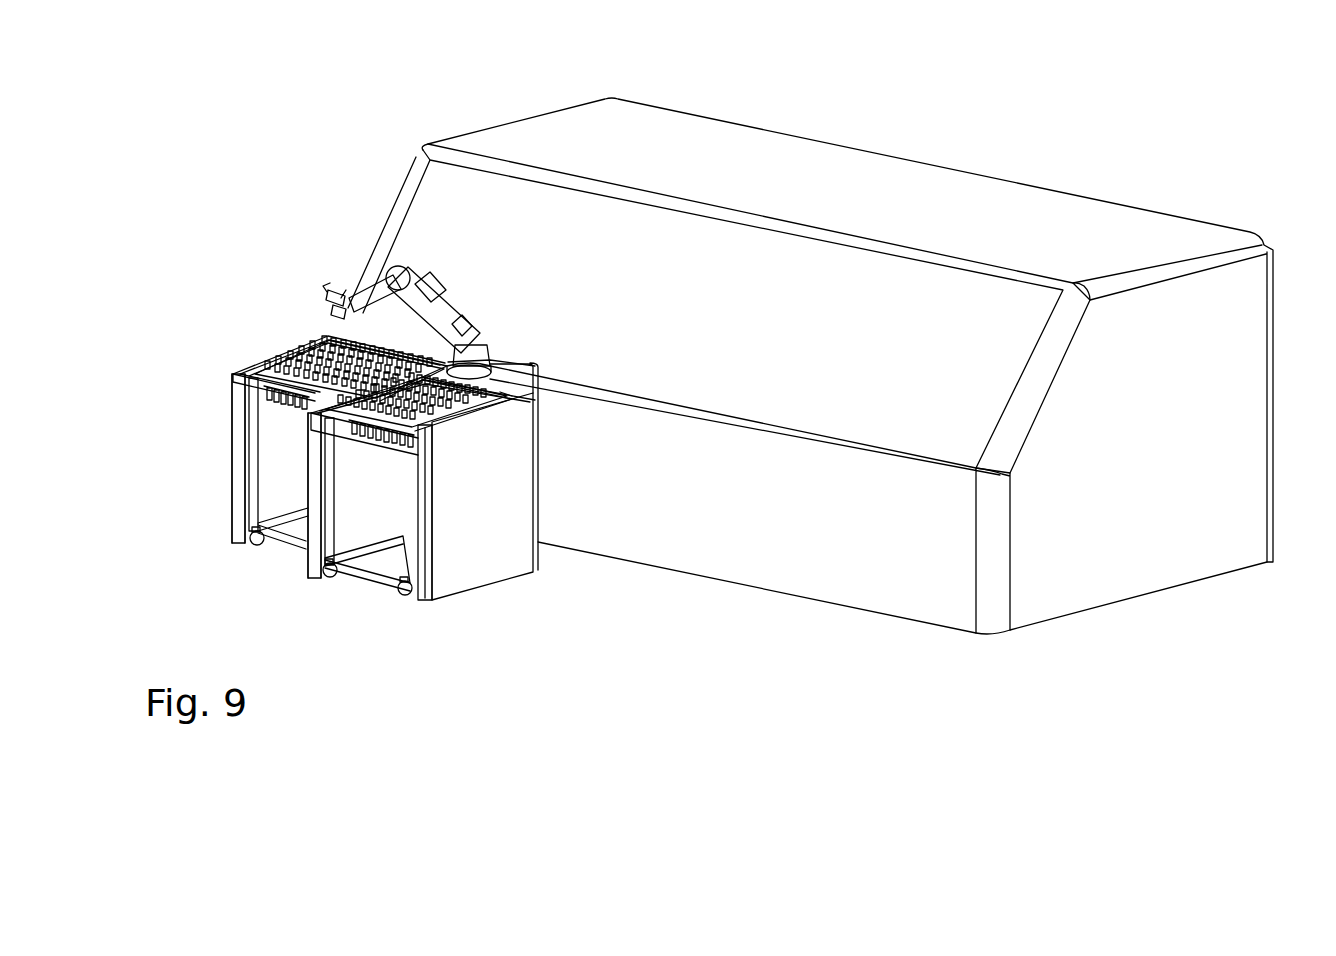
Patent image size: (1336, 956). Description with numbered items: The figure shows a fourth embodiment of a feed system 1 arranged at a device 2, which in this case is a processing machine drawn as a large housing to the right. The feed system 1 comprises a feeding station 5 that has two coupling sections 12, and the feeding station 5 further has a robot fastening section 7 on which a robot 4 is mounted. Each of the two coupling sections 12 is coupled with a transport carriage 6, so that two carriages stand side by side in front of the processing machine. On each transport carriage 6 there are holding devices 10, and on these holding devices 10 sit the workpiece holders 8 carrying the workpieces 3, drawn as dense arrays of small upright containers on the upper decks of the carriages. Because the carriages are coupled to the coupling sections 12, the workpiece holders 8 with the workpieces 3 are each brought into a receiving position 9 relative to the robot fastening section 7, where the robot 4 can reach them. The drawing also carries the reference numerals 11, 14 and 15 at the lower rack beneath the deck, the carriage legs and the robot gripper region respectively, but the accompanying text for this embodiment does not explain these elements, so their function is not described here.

The feed system 1 is at (172, 249).
The device 2 is at (1064, 260).
The workpieces 3 is at (286, 362).
The robot 4 is at (419, 265).
The feeding station 5 is at (500, 532).
The transport carriage 6 is at (251, 530).
The robot fastening section 7 is at (482, 363).
The workpiece holders 8 is at (268, 365).
The receiving position 9 is at (313, 328).
The holding devices 10 is at (300, 359).
The lower rack 11 is at (342, 439).
The coupling sections 12 is at (289, 472).
The leg 14 is at (234, 495).
The gripper position 15 is at (348, 309).